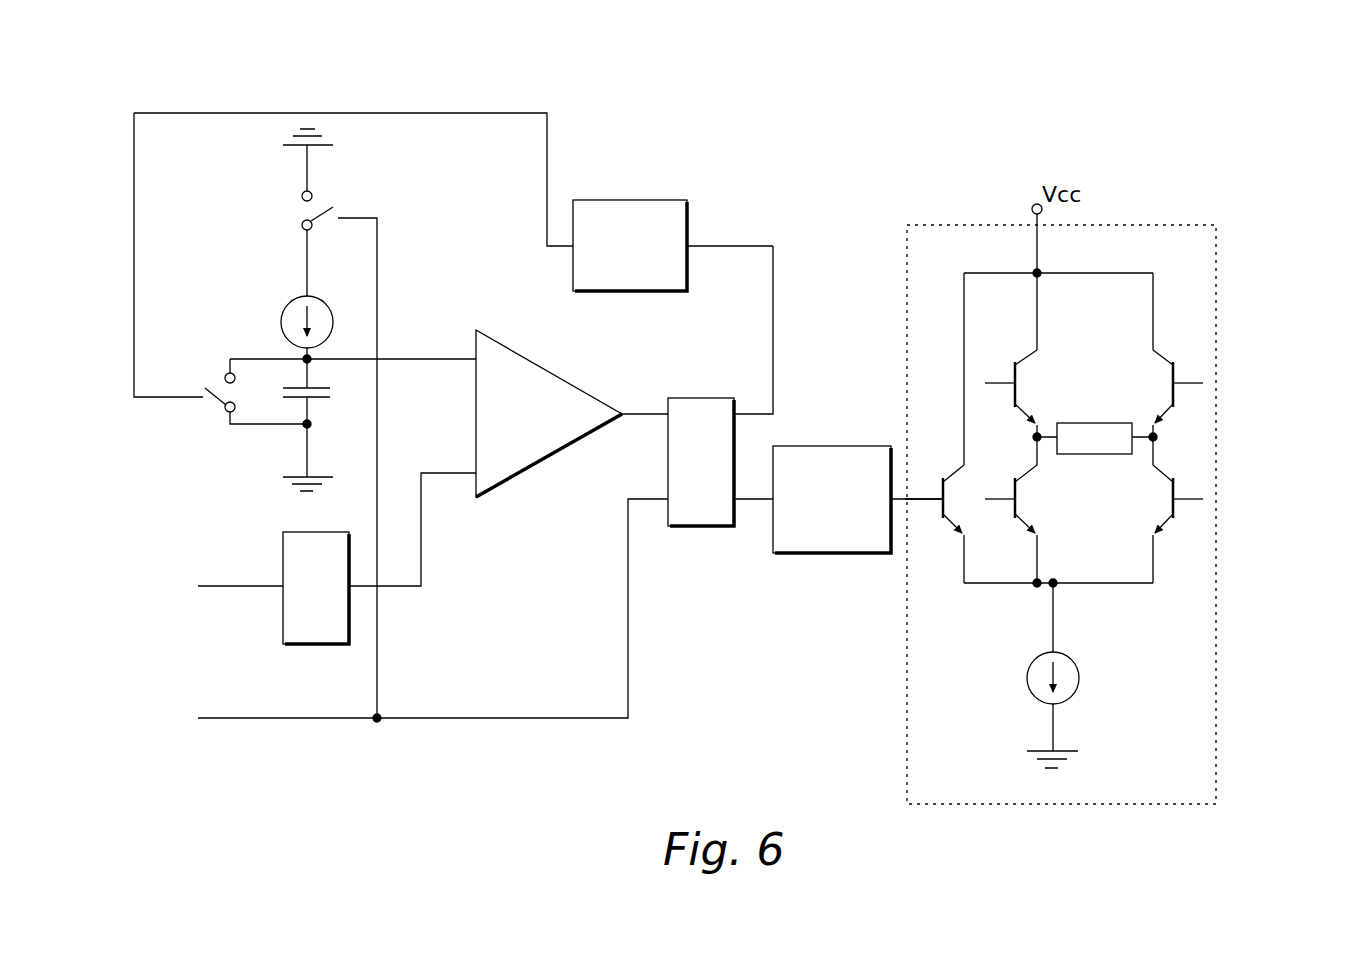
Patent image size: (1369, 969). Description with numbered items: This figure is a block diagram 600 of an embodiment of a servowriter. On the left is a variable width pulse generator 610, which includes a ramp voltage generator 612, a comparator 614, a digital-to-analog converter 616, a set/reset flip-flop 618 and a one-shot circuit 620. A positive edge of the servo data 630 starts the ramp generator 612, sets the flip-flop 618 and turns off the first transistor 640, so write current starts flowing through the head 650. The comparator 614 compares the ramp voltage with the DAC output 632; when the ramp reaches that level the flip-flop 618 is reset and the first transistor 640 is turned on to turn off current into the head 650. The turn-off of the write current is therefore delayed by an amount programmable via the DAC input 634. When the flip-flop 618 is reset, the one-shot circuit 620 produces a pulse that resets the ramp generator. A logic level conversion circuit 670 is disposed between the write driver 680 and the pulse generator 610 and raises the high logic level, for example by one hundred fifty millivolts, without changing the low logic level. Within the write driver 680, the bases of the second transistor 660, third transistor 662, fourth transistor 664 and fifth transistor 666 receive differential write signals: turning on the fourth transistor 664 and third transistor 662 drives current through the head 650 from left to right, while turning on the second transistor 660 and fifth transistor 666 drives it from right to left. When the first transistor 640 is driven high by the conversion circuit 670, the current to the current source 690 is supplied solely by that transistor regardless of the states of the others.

The block diagram 600 is at (918, 98).
The variable width pulse generator 610 is at (451, 112).
The ramp voltage generator 612 is at (207, 268).
The comparator 614 is at (550, 368).
The digital-to-analog converter (DAC) 616 is at (283, 547).
The set/reset flip-flop 618 is at (690, 527).
The one-shot circuit 620 is at (648, 200).
The servo data 630 is at (322, 763).
The DAC output 632 is at (407, 588).
The DAC input 634 is at (193, 637).
The transistor Q1 640 is at (922, 565).
The head 650 is at (1095, 423).
The transistor Q2 660 is at (1023, 522).
The transistor Q3 662 is at (1163, 522).
The transistor Q4 664 is at (1023, 360).
The transistor Q5 666 is at (1165, 360).
The logic level conversion circuit 670 is at (803, 553).
The write driver 680 is at (1300, 585).
The current source 690 is at (1078, 673).